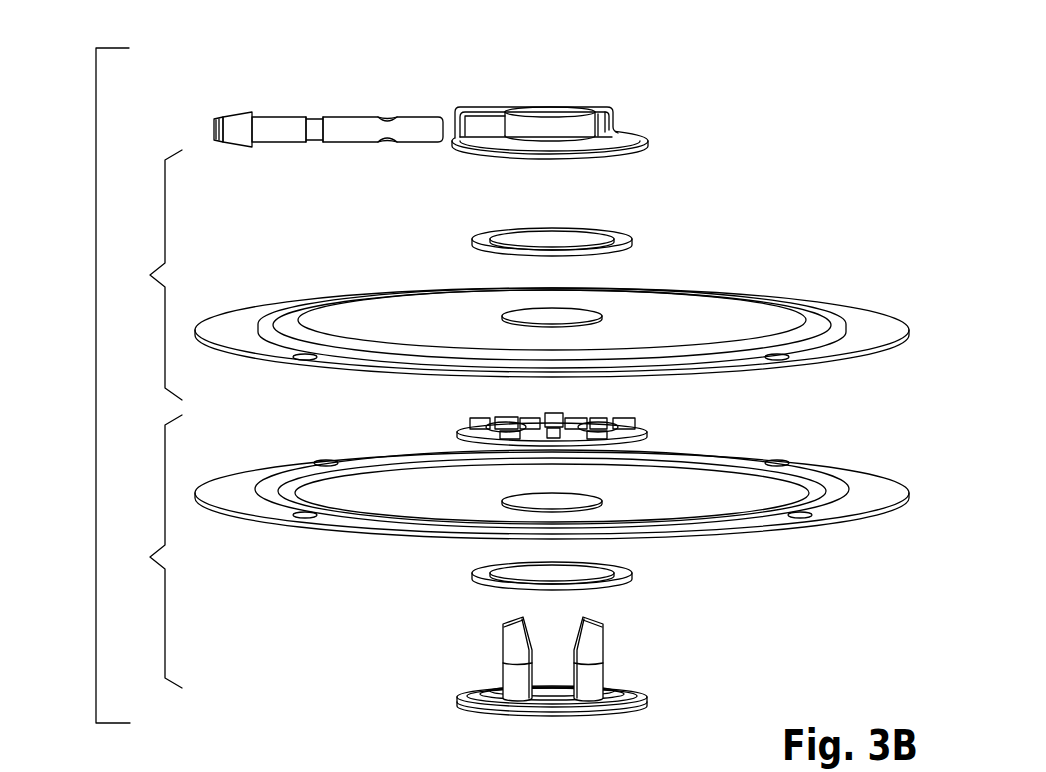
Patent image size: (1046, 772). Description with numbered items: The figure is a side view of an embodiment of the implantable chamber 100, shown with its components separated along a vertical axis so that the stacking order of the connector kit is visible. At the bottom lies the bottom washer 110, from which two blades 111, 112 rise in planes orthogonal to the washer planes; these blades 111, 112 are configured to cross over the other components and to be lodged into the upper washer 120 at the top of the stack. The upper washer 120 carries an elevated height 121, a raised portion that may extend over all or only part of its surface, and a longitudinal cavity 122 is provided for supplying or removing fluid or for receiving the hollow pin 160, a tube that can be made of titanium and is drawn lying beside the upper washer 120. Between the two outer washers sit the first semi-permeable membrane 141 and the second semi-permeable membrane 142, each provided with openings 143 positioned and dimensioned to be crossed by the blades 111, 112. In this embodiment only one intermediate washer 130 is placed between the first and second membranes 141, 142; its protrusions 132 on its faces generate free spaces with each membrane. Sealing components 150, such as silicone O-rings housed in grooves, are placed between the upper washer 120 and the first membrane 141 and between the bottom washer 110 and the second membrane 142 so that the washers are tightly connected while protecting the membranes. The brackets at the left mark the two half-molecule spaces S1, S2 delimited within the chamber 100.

The chamber 100 is at (81, 45).
The bottom washer 110 is at (650, 697).
The blade 111 is at (598, 653).
The blade 112 is at (517, 650).
The upper washer 120 is at (630, 135).
The elevated height 121 is at (570, 118).
The longitudinal cavity 122 is at (354, 771).
The intermediate washer 130 is at (640, 436).
The protrusions 132 is at (560, 414).
The first semi-permeable membrane 141 is at (876, 330).
The second semi-permeable membrane 142 is at (878, 490).
The opening 143 is at (582, 308).
The sealing component 150 is at (618, 234).
The hollow pin 160 is at (284, 132).
The half molecules space S1 is at (147, 275).
The half molecules space S2 is at (146, 551).